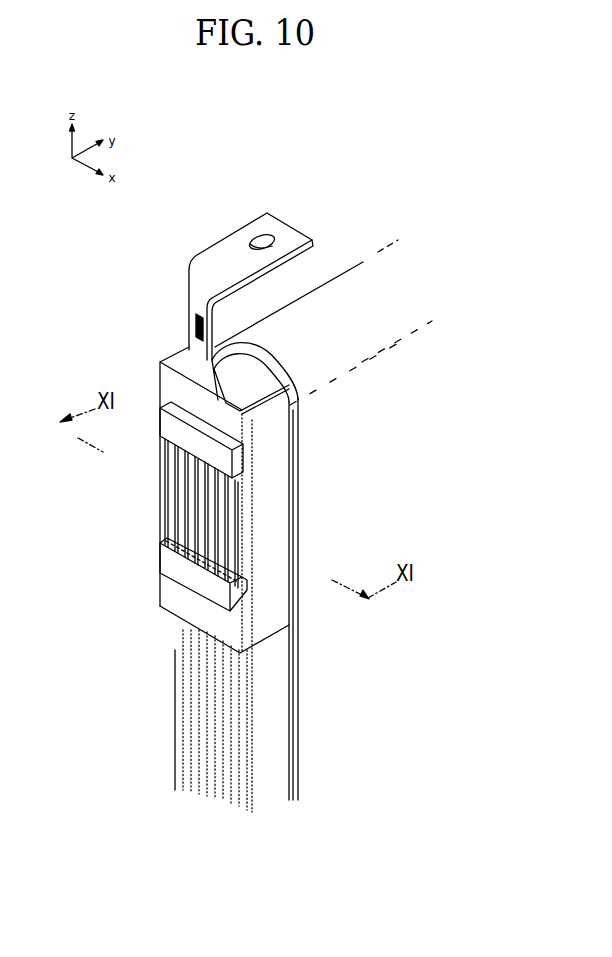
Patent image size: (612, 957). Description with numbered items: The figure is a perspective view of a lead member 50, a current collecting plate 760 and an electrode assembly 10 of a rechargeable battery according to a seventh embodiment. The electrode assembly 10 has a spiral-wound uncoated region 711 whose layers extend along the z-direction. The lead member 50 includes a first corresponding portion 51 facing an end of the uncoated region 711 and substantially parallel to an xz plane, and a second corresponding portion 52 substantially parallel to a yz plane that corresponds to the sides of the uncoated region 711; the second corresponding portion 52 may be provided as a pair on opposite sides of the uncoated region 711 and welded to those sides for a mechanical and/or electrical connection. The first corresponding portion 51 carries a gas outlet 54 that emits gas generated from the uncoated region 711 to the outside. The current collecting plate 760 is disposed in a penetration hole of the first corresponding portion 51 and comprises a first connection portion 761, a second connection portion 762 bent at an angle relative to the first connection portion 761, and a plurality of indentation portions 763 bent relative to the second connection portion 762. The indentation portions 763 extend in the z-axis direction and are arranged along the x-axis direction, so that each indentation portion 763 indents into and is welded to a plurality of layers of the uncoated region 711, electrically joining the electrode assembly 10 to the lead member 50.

The electrode assembly 10 is at (347, 263).
The uncoated region 711 is at (250, 373).
The gas outlet 54 is at (193, 333).
The lead member 50 is at (158, 363).
The current collecting plate 760 is at (151, 513).
The first connection portion 761 is at (160, 465).
The second connection portion 762 is at (196, 494).
The indentation portion 763 is at (200, 520).
The first corresponding portion 51 is at (170, 603).
The second corresponding portion 52 is at (265, 597).